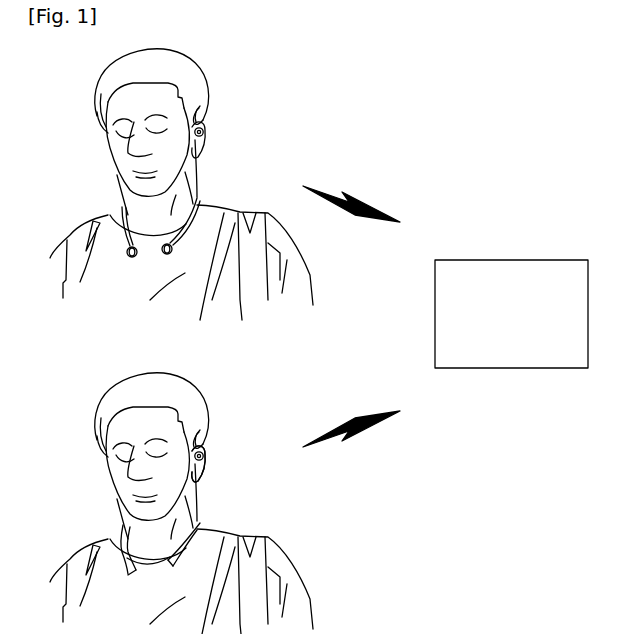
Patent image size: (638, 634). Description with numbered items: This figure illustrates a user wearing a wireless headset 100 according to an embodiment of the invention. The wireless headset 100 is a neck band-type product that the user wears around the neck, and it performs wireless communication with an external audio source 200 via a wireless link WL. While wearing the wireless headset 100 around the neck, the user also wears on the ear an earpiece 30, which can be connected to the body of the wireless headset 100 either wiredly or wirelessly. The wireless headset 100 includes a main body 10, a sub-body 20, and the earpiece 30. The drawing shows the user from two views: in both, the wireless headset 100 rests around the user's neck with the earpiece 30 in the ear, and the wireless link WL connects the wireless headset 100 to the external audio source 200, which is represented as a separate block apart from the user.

The main body 10 is at (205, 275).
The sub-body 20 is at (200, 470).
The earpiece 30 is at (204, 131).
The wireless headset 100 is at (118, 232).
The external audio source 200 is at (526, 319).
The wireless link WL is at (327, 190).